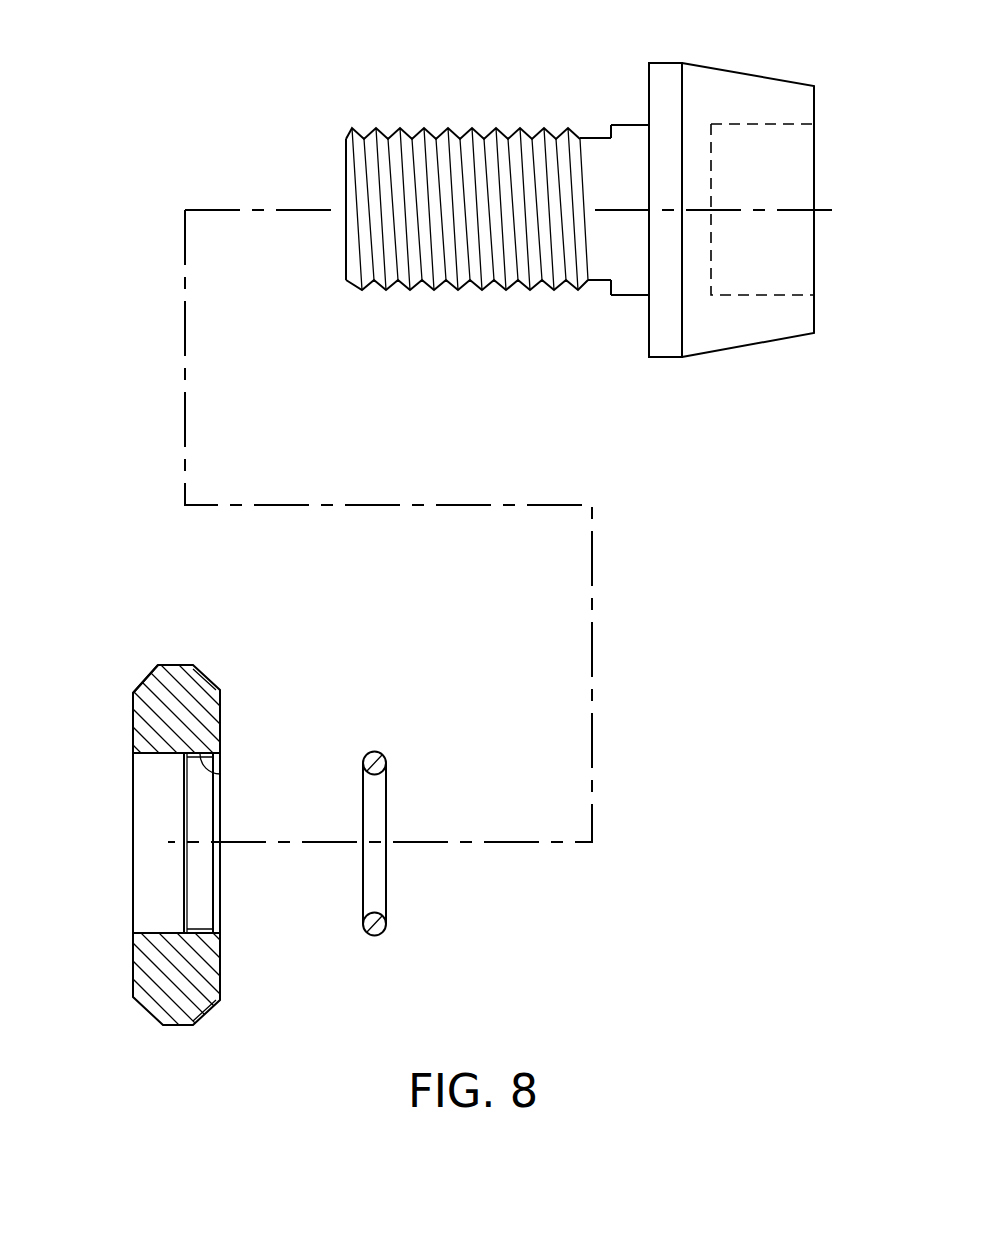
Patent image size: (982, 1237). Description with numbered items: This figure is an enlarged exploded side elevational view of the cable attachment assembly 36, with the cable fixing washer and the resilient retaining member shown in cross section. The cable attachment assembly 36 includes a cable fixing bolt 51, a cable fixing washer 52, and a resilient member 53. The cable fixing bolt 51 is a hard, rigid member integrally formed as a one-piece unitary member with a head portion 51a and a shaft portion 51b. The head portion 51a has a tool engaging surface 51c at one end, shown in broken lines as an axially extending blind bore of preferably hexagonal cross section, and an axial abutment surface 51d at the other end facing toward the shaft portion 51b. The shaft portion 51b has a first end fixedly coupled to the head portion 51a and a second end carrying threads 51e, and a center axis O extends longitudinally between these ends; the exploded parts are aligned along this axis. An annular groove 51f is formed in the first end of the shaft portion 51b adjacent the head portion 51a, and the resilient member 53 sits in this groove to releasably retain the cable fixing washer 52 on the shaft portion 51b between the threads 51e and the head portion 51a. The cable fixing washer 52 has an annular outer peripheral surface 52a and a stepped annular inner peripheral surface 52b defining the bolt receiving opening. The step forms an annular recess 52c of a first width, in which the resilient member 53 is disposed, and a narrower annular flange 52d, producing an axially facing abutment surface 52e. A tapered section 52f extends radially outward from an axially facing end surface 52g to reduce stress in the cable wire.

The cable attachment assembly 36 is at (96, 188).
The center axis O is at (213, 210).
The cable fixing bolt 51 is at (615, 212).
The head portion 51a is at (742, 70).
The shaft portion 51b is at (467, 201).
The tool engaging surface 51c is at (783, 293).
The axial abutment surface 51d is at (647, 92).
The threads 51e is at (390, 257).
The annular groove 51f is at (593, 283).
The cable fixing washer 52 is at (304, 833).
The outer peripheral surface 52a is at (177, 663).
The inner peripheral surface 52b is at (200, 820).
The annular recess 52c is at (157, 933).
The annular flange 52d is at (217, 780).
The axially facing abutment surface 52e is at (180, 928).
The tapered section 52f is at (138, 680).
The axially facing end surface 52g is at (133, 715).
The resilient member 53 is at (388, 752).